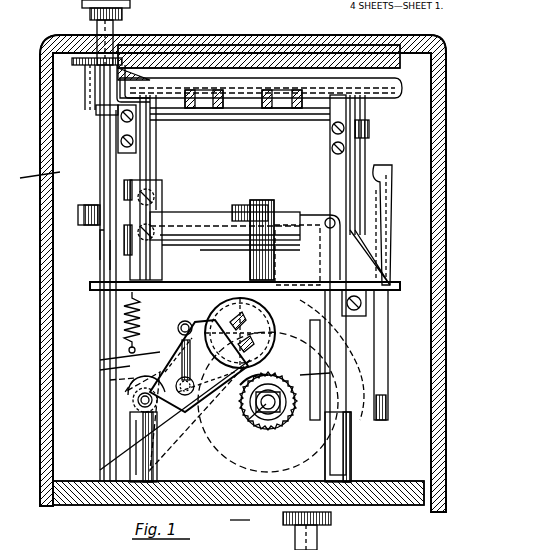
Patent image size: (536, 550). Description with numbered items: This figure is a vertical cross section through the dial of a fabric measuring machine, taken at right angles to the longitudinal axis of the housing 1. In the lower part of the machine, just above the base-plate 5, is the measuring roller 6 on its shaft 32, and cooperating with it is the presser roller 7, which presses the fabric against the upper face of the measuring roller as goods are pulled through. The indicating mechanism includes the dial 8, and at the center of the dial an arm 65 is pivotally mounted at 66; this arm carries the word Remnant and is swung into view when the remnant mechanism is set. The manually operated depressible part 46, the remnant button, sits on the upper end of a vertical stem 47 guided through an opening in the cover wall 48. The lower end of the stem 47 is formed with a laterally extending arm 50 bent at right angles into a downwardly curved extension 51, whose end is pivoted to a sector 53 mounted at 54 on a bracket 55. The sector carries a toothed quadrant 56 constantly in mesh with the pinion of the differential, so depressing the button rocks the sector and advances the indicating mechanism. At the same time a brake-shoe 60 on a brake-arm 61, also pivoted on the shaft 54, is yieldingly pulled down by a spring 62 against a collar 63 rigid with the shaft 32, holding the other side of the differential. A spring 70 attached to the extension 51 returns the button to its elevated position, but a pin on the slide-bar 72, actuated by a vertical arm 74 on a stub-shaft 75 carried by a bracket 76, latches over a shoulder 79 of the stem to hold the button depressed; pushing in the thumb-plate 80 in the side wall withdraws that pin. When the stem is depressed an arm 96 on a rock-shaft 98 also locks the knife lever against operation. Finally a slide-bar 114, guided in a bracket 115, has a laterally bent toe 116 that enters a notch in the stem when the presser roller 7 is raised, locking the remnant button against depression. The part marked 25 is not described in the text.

The housing 1 is at (450, 280).
The base-plate 5 is at (378, 485).
The measuring roller 6 is at (388, 408).
The presser roller 7 is at (312, 320).
The dial 8 is at (380, 90).
The ratchet wheel 25 is at (380, 446).
The shaft 32 is at (248, 420).
The depressible part 46 is at (130, 8).
The vertical stem 47 is at (100, 152).
The cover wall 48 is at (240, 535).
The laterally extending arm 50 is at (100, 366).
The downwardly curved extension 51 is at (110, 382).
The sector 53 is at (206, 302).
The pivot 54 is at (138, 402).
The bracket 55 is at (160, 430).
The toothed quadrant 56 is at (318, 366).
The brake-shoe 60 is at (250, 398).
The brake-arm 61 is at (178, 326).
The spring 62 is at (195, 376).
The collar 63 is at (268, 430).
The arm 65 is at (180, 110).
The pivot 66 is at (218, 110).
The spring 70 is at (124, 336).
The slide-bar 72 is at (100, 190).
The vertical arm 74 is at (110, 232).
The stub-shaft 75 is at (195, 240).
The bracket 76 is at (280, 243).
The shoulder 79 is at (31, 178).
The thumb-plate 80 is at (240, 333).
The arm 96 is at (96, 118).
The rock-shaft 98 is at (90, 106).
The slide-bar 114 is at (185, 215).
The bracket 115 is at (160, 185).
The toe 116 is at (78, 215).